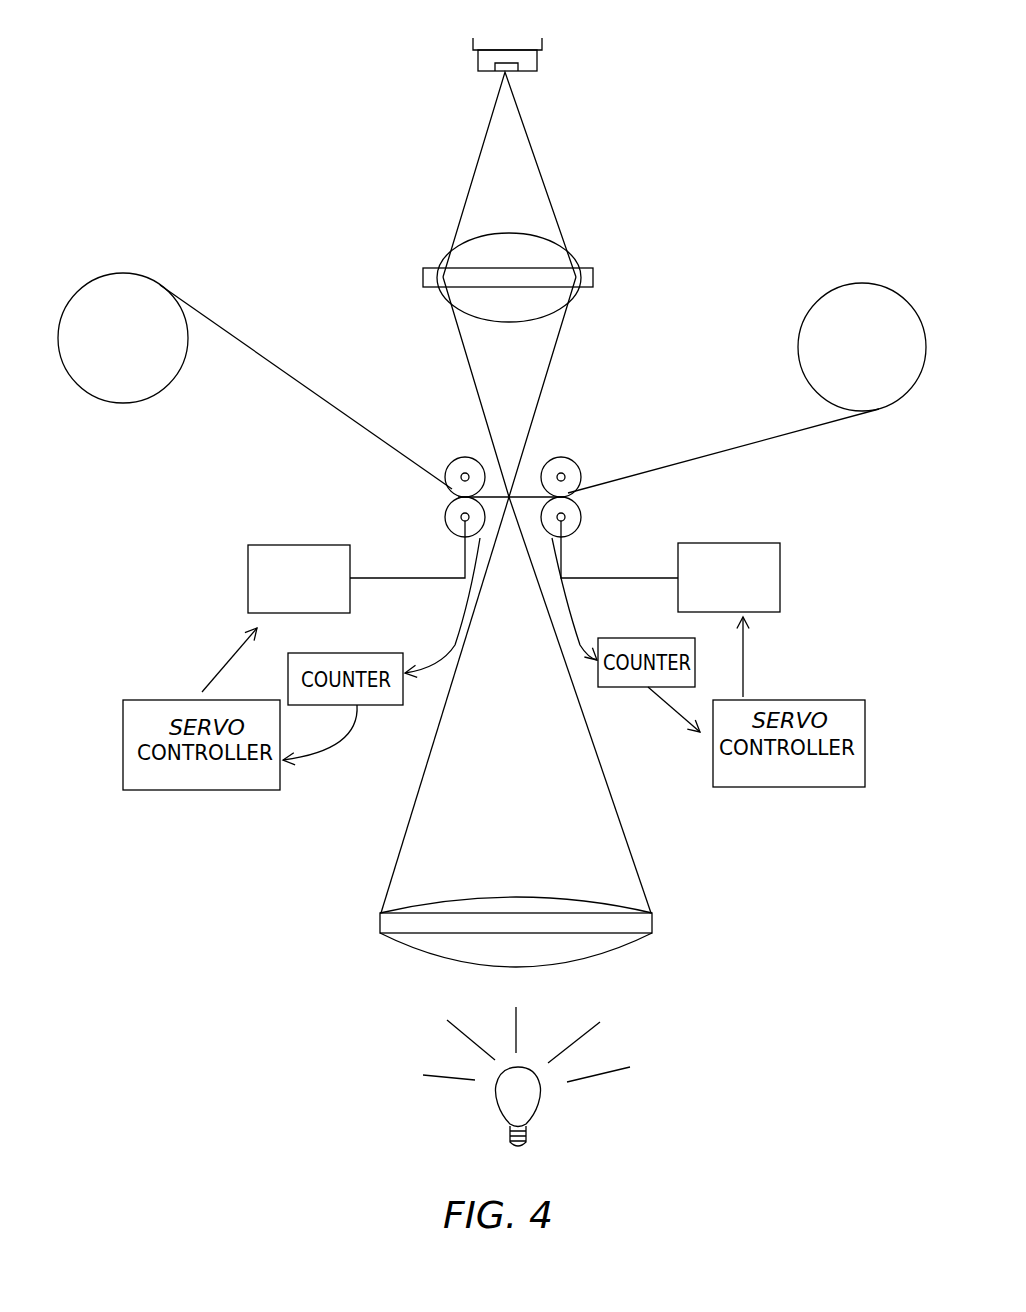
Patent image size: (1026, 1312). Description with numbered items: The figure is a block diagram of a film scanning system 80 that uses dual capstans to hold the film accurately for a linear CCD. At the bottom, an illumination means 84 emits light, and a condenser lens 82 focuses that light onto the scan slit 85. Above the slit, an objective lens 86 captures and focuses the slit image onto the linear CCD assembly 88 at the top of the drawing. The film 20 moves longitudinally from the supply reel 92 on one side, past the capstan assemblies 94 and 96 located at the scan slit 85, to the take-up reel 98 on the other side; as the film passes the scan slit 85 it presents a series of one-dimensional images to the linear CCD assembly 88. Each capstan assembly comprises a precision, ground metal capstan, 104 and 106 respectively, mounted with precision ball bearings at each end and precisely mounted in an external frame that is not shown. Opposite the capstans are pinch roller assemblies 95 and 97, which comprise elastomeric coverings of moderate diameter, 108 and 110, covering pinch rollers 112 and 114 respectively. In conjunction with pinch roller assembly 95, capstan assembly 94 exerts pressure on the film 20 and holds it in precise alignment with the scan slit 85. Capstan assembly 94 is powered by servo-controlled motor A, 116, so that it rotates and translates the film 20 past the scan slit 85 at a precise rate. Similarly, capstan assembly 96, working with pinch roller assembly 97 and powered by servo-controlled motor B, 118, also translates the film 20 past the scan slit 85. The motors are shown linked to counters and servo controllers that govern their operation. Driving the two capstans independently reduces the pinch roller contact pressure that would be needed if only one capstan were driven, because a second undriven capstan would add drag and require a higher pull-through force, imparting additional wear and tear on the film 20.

The film 20 is at (330, 398).
The film scanning system 80 is at (190, 72).
The condenser lens 82 is at (420, 953).
The illumination means 84 is at (507, 1120).
The scan slit 85 is at (509, 497).
The objective lens 86 is at (440, 262).
The linear CCD assembly 88 is at (494, 40).
The supply reel 92 is at (100, 275).
The capstan assembly 94 is at (440, 534).
The pinch roller assembly 95 is at (383, 440).
The capstan assembly 96 is at (588, 533).
The pinch roller assembly 97 is at (636, 456).
The take-up reel 98 is at (853, 283).
The capstan 104 is at (462, 517).
The capstan 106 is at (563, 518).
The elastomeric covering 108 is at (477, 458).
The elastomeric covering 110 is at (553, 458).
The pinch roller 112 is at (462, 477).
The pinch roller 114 is at (563, 477).
The motor A 116 is at (248, 593).
The motor B 118 is at (780, 570).